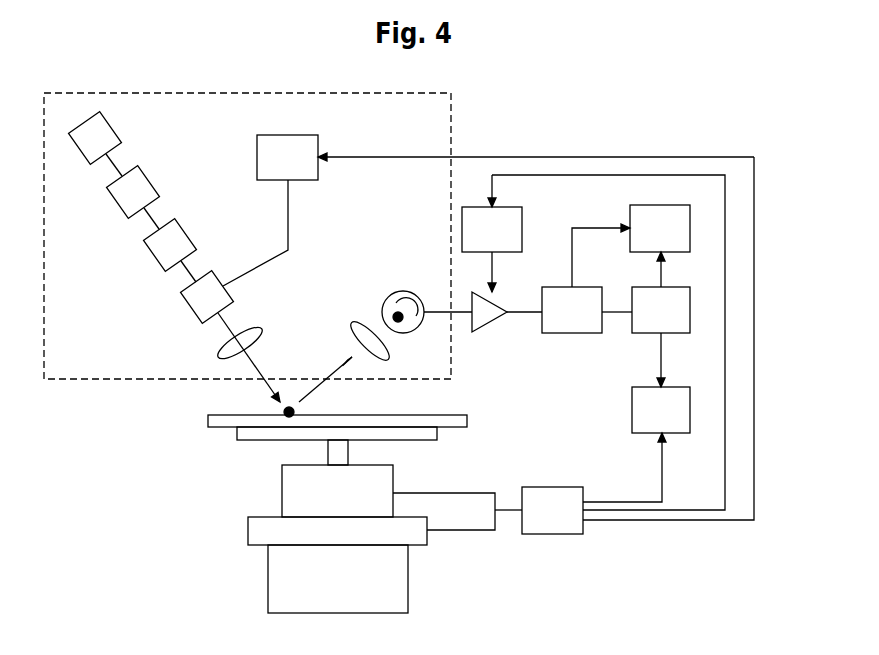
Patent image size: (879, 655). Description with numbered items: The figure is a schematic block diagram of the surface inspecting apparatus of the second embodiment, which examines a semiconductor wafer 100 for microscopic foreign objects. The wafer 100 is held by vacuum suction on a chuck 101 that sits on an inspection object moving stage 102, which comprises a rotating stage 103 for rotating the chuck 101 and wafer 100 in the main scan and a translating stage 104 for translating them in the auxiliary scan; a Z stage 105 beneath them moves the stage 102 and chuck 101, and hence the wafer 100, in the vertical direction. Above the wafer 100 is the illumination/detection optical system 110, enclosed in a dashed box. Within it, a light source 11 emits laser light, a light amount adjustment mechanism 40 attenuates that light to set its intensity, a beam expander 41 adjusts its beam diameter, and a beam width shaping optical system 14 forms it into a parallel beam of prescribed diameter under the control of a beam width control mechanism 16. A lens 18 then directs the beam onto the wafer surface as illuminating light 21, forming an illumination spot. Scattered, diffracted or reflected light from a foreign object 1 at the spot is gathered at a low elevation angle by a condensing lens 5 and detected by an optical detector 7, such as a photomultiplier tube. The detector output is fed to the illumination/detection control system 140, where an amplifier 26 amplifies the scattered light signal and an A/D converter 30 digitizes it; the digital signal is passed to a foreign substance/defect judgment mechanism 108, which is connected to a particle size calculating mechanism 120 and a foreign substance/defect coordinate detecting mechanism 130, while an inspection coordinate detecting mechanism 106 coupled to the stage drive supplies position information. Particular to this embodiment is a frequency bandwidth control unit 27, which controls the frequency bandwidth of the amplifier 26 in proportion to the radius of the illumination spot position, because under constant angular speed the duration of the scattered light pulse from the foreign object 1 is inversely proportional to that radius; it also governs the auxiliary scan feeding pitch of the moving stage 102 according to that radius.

The foreign object 1 is at (292, 406).
The condensing lens 5 is at (388, 357).
The optical detector 7 is at (410, 291).
The light source 11 is at (113, 128).
The beam width shaping optical system 14 is at (188, 307).
The beam width control mechanism 16 is at (318, 135).
The lens 18 is at (218, 356).
The illuminating light 21 is at (258, 366).
The amplifier 26 is at (483, 325).
The frequency bandwidth control unit 27 is at (522, 207).
The A/D converter 30 is at (573, 333).
The light amount adjustment mechanism 40 is at (115, 207).
The beam expander 41 is at (152, 257).
The semiconductor wafer 100 is at (208, 427).
The chuck 101 is at (238, 440).
The inspection object moving stage 102 is at (136, 525).
The rotating stage 103 is at (282, 490).
The translating stage 104 is at (248, 536).
The Z stage 105 is at (268, 590).
The inspection coordinate detecting mechanism 106 is at (580, 534).
The foreign substance/defect judgment mechanism 108 is at (690, 308).
The illumination/detection optical system 110 is at (451, 93).
The particle size calculating mechanism 120 is at (690, 226).
The foreign substance/defect coordinate detecting mechanism 130 is at (690, 410).
The illumination/detection control system 140 is at (623, 141).